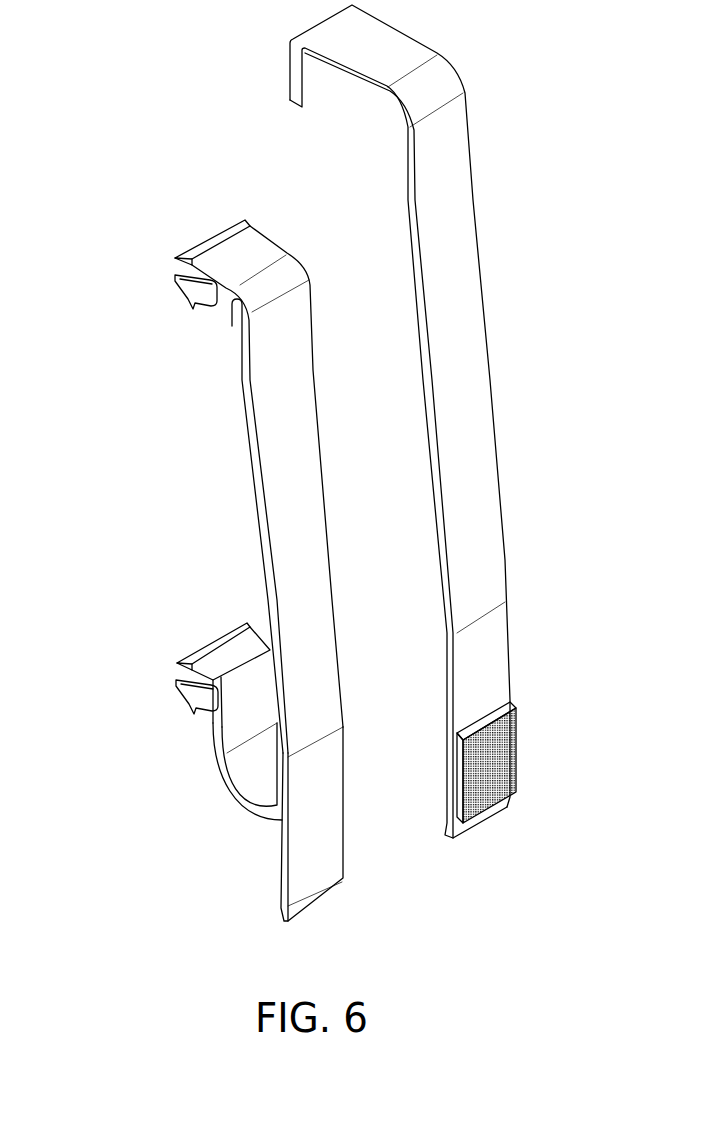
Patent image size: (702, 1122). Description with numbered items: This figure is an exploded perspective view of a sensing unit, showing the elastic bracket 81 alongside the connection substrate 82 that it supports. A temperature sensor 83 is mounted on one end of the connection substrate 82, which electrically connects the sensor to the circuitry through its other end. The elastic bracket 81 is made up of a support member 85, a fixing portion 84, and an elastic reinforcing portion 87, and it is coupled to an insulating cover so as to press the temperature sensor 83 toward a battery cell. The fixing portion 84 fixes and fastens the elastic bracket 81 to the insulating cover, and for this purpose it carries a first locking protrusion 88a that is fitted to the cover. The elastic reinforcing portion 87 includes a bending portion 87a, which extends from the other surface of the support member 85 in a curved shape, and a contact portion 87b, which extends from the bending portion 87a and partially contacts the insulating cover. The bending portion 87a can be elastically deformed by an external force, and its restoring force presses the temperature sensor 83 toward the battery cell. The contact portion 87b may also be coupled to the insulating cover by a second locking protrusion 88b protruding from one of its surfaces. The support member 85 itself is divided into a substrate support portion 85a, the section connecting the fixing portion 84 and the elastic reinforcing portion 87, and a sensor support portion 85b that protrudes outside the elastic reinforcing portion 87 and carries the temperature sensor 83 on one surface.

The elastic bracket 81 is at (218, 871).
The connection substrate 82 is at (467, 418).
The temperature sensor 83 is at (507, 750).
The fixing portion 84 is at (161, 294).
The support member 85 is at (358, 580).
The substrate support portion 85a is at (315, 672).
The sensor support portion 85b is at (315, 835).
The elastic reinforcing portion 87 is at (157, 726).
The bending portion 87a is at (226, 792).
The contact portion 87b is at (212, 735).
The first locking protrusion 88a is at (190, 293).
The second locking protrusion 88b is at (188, 704).